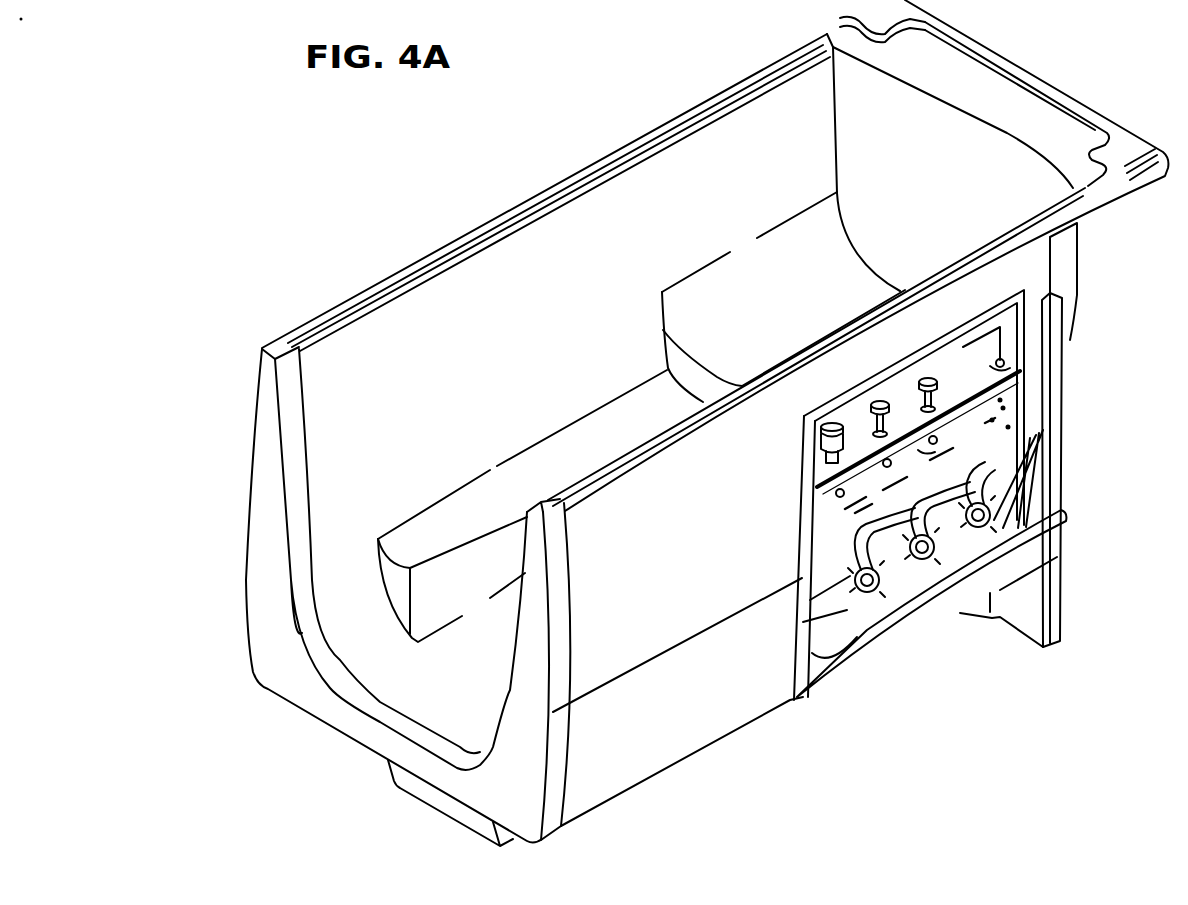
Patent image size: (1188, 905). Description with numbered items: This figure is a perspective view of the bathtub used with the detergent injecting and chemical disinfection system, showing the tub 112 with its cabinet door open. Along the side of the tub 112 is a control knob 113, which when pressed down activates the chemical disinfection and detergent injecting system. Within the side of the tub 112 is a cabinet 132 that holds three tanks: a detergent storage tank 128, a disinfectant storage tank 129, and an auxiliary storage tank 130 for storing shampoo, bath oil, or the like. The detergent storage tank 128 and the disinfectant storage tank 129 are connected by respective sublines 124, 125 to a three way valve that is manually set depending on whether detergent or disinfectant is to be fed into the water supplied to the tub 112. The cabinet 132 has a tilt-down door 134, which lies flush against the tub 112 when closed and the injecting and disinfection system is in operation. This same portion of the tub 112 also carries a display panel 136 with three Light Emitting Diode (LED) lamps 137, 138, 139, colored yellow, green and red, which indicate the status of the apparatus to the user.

The tub 112 is at (340, 300).
The control knob 113 is at (822, 434).
The subline 124 is at (853, 543).
The subline 125 is at (906, 578).
The detergent storage tank 128 is at (847, 612).
The disinfectant storage tank 129 is at (940, 575).
The auxiliary storage tank 130 is at (980, 520).
The cabinet 132 is at (990, 470).
The tilt-down door 134 is at (1023, 551).
The display panel 136 is at (923, 453).
The Light Emitting Diode (LED) lamp 137 is at (803, 500).
The Light Emitting Diode (LED) lamp 138 is at (886, 461).
The Light Emitting Diode (LED) lamp 139 is at (932, 437).